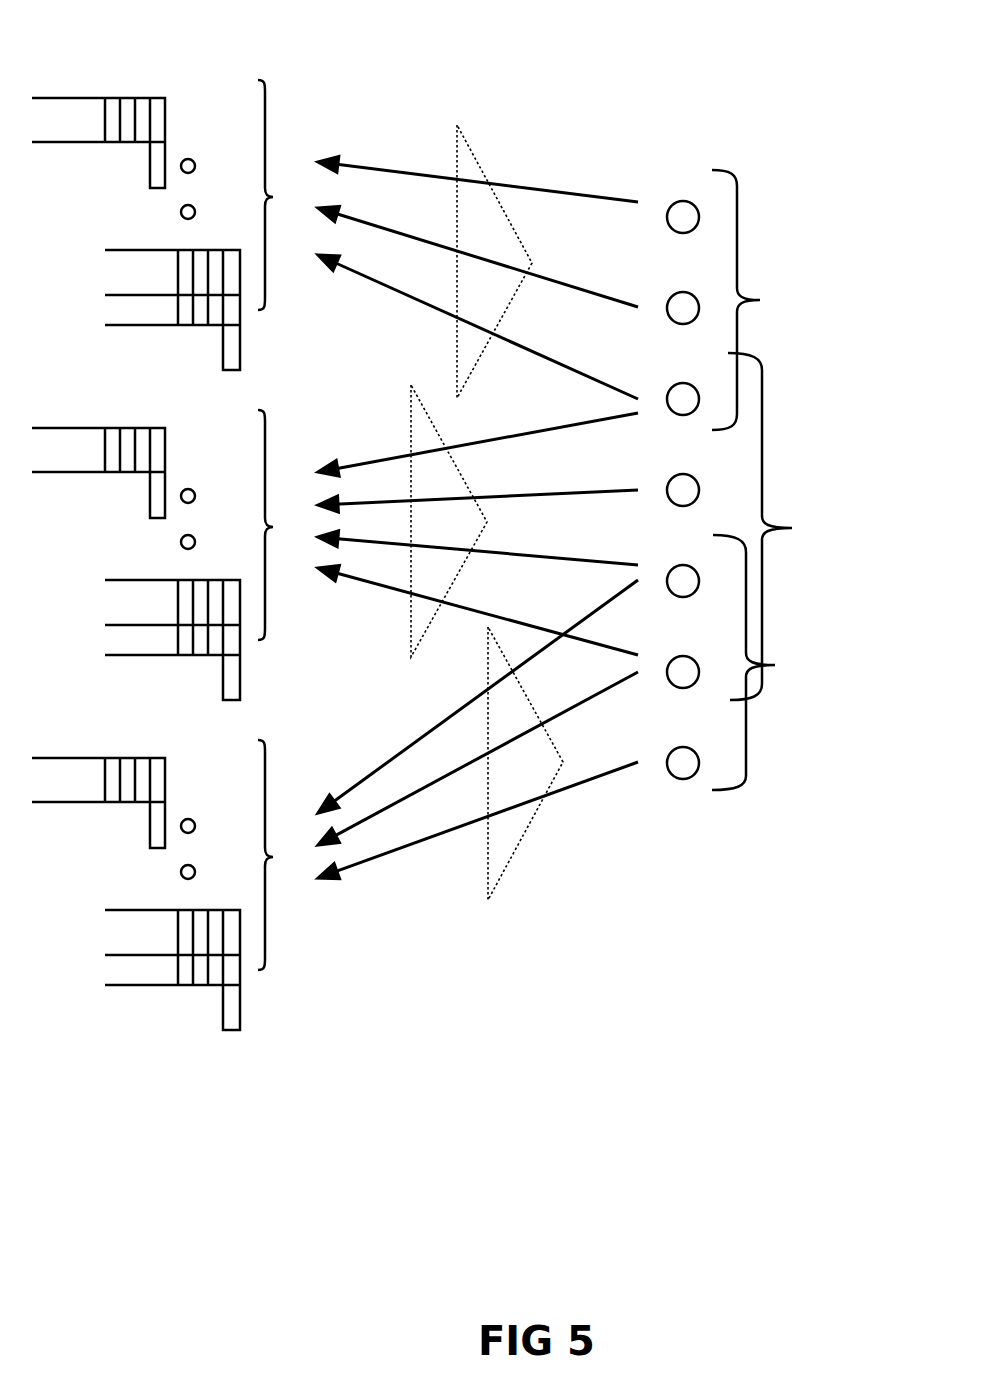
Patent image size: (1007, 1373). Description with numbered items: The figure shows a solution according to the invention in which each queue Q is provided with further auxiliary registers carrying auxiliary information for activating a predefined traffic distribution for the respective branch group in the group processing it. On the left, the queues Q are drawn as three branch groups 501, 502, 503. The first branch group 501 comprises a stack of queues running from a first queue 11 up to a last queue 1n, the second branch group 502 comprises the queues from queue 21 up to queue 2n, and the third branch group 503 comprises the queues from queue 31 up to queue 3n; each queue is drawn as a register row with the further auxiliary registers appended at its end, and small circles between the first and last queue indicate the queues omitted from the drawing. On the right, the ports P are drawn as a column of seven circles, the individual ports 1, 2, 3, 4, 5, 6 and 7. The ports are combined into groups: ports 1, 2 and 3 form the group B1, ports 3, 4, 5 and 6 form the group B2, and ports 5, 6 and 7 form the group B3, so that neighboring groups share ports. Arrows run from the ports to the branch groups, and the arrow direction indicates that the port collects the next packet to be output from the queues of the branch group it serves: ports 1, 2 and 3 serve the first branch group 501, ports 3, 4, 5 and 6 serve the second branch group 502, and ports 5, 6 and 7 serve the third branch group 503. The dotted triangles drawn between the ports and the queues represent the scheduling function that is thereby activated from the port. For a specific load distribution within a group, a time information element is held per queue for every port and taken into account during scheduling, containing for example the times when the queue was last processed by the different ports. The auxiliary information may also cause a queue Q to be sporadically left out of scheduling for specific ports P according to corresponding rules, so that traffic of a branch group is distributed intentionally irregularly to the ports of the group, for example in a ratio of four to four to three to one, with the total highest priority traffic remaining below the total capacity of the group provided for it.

The last block of first group 1n is at (99, 127).
The first block of first group 11 is at (173, 294).
The first group of blocks 501 is at (239, 222).
The last block of second group 2n is at (99, 457).
The first block of second group 21 is at (173, 624).
The second group of blocks 502 is at (239, 552).
The last block of third group 3n is at (99, 787).
The first block of third group 31 is at (173, 954).
The third group of blocks 503 is at (239, 882).
The port 1 is at (690, 207).
The port 2 is at (690, 298).
The port 3 is at (690, 389).
The port 4 is at (690, 480).
The point 5 is at (690, 571).
The point 6 is at (690, 662).
The point 7 is at (690, 753).
The port P is at (681, 96).
The queue Q is at (48, 12).
The group B1 is at (789, 300).
The group B2 is at (806, 526).
The group B3 is at (798, 662).